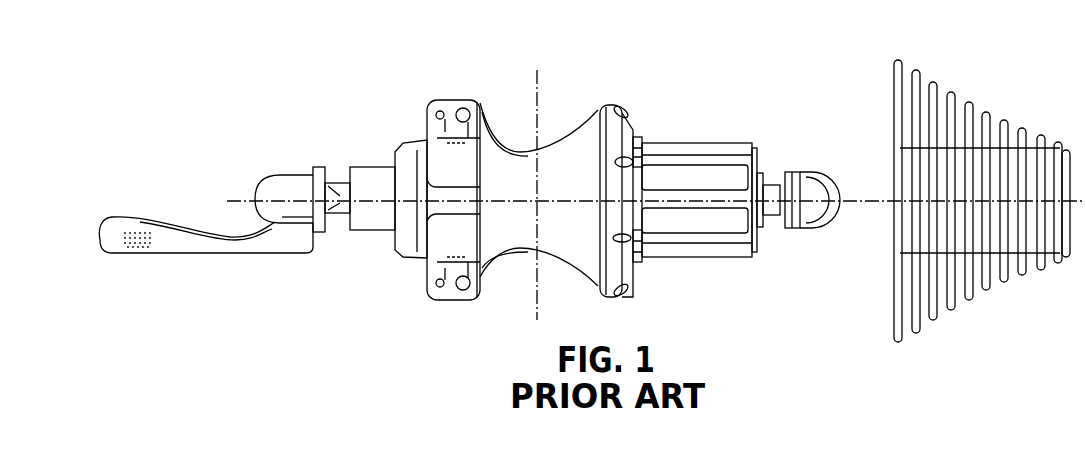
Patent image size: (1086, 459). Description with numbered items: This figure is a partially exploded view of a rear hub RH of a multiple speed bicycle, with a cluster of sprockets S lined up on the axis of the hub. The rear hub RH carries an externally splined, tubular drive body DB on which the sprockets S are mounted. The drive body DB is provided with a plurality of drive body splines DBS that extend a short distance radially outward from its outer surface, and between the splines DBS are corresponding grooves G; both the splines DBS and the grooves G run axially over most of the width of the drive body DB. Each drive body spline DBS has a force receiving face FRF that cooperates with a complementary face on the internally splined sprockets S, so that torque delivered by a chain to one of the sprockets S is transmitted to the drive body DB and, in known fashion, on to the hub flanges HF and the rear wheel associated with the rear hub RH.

The rear hub RH is at (352, 295).
The hub flanges HF is at (613, 102).
The drive body splines DBS is at (665, 144).
The force receiving face FRF is at (700, 156).
The grooves G is at (700, 238).
The drive body DB is at (757, 148).
The sprockets S is at (1003, 284).